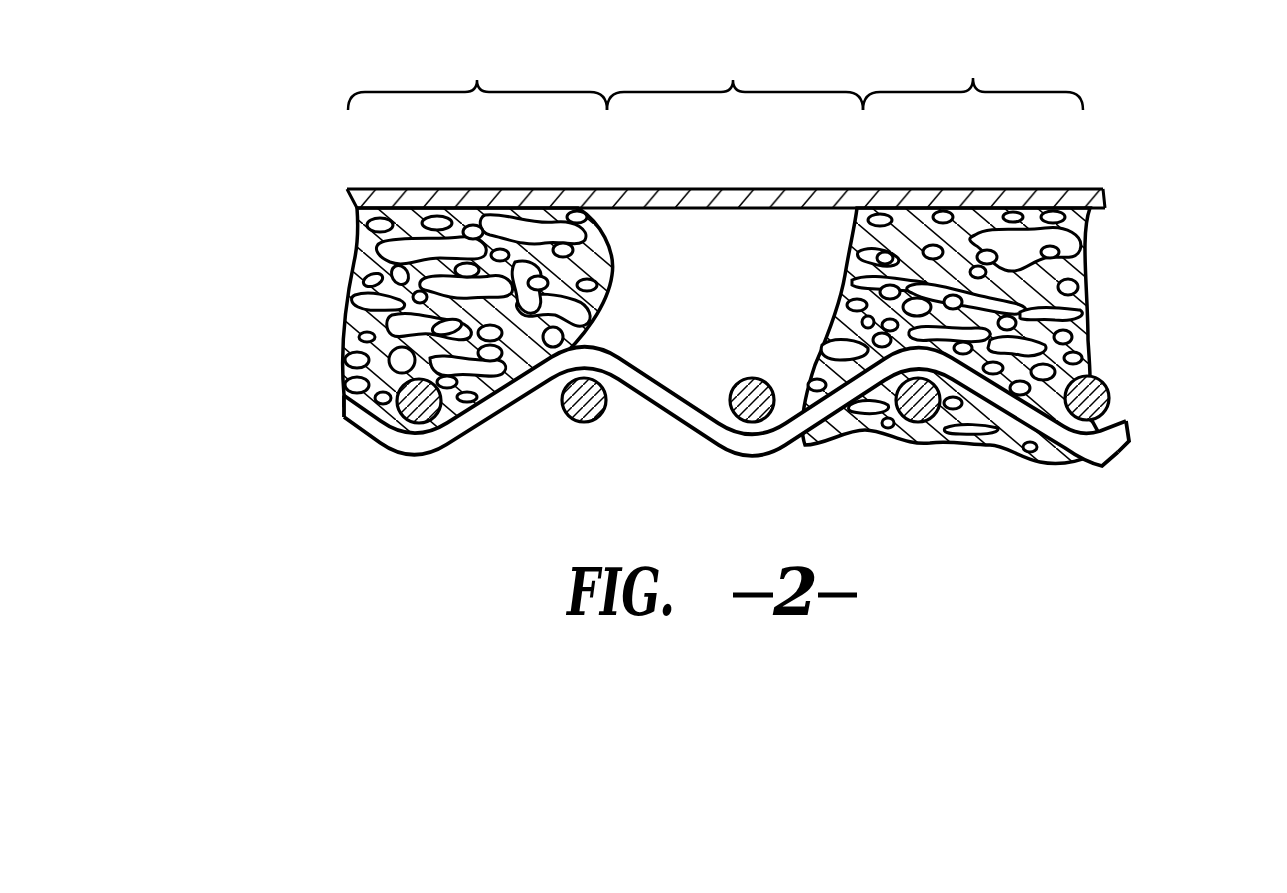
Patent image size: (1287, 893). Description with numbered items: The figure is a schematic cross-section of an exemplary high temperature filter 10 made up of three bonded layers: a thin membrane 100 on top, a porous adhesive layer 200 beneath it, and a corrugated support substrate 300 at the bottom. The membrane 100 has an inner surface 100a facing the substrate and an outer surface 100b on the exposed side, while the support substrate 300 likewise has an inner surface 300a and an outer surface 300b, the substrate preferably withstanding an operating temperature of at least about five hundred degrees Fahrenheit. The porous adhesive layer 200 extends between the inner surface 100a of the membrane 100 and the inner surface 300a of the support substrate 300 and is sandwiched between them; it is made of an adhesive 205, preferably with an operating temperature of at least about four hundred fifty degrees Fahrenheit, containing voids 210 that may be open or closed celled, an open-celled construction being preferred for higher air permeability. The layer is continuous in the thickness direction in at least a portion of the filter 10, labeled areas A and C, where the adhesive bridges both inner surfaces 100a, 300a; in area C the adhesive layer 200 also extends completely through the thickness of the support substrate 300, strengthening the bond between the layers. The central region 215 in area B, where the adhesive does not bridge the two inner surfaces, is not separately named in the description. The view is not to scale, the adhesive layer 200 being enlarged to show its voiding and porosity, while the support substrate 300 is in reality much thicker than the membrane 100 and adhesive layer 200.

The high temperature filter 10 is at (1108, 127).
The membrane 100 is at (1157, 187).
The inner surface of the membrane 100a is at (337, 208).
The outer surface of the membrane 100b is at (336, 189).
The porous adhesive layer 200 is at (1157, 211).
The adhesive 205 is at (500, 228).
The voids 210 is at (930, 268).
The void region 215 is at (688, 247).
The support substrate 300 is at (729, 420).
The inner surface of the support substrate 300a is at (333, 328).
The outer surface of the support substrate 300b is at (333, 420).